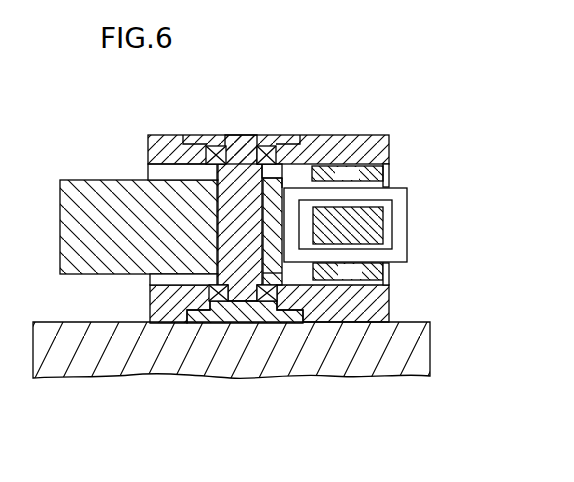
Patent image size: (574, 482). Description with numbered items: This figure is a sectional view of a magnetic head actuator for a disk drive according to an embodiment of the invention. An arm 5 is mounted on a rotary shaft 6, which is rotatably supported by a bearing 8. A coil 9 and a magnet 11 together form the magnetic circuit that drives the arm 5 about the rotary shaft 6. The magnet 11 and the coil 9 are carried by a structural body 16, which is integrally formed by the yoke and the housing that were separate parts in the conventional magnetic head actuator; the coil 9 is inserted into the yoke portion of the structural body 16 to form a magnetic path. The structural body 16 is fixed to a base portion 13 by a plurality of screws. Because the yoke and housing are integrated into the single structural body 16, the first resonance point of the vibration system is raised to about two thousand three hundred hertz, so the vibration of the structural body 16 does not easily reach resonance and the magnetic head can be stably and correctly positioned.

The arm 5 is at (120, 188).
The rotary shaft 6 is at (277, 199).
The bearing 8 is at (264, 146).
The coil 9 is at (407, 215).
The magnet 11 is at (389, 151).
The base portion 13 is at (413, 351).
The structural body 16 is at (170, 134).